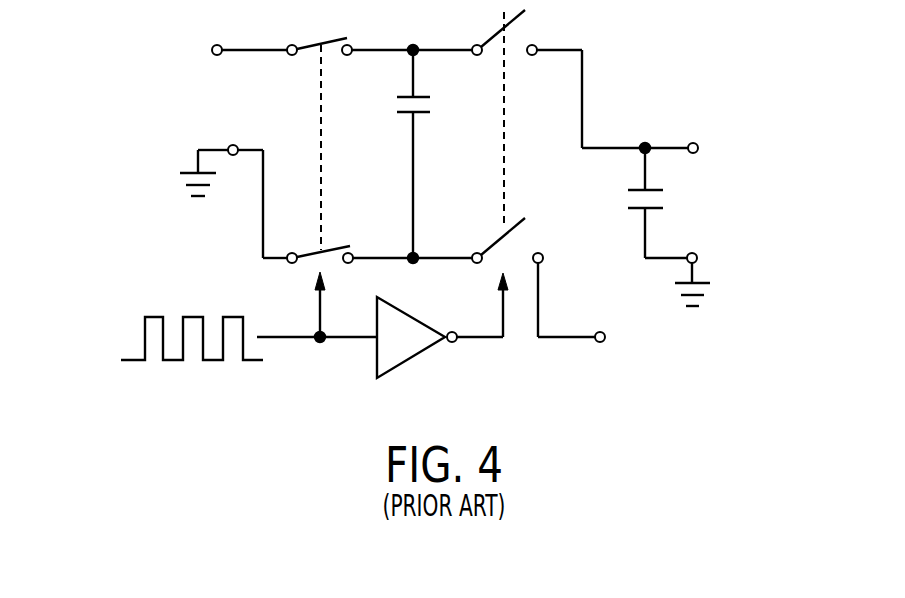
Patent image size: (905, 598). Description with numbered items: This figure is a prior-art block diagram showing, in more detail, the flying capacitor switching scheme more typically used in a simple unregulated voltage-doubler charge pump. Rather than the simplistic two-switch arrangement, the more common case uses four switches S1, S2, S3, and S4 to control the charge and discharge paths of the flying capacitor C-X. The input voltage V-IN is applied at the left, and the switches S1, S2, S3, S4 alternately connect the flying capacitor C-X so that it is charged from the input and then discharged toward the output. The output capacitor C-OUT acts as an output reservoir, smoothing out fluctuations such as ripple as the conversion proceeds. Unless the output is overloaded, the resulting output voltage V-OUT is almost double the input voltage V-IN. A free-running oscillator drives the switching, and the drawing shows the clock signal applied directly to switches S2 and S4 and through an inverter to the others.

The switch S1 is at (317, 33).
The switch S2 is at (317, 242).
The switch S3 is at (502, 32).
The switch S4 is at (505, 240).
The flying capacitor C-X is at (392, 156).
The output capacitor C-OUT is at (633, 227).
The input voltage V-IN is at (407, 194).
The output voltage V-OUT is at (694, 132).